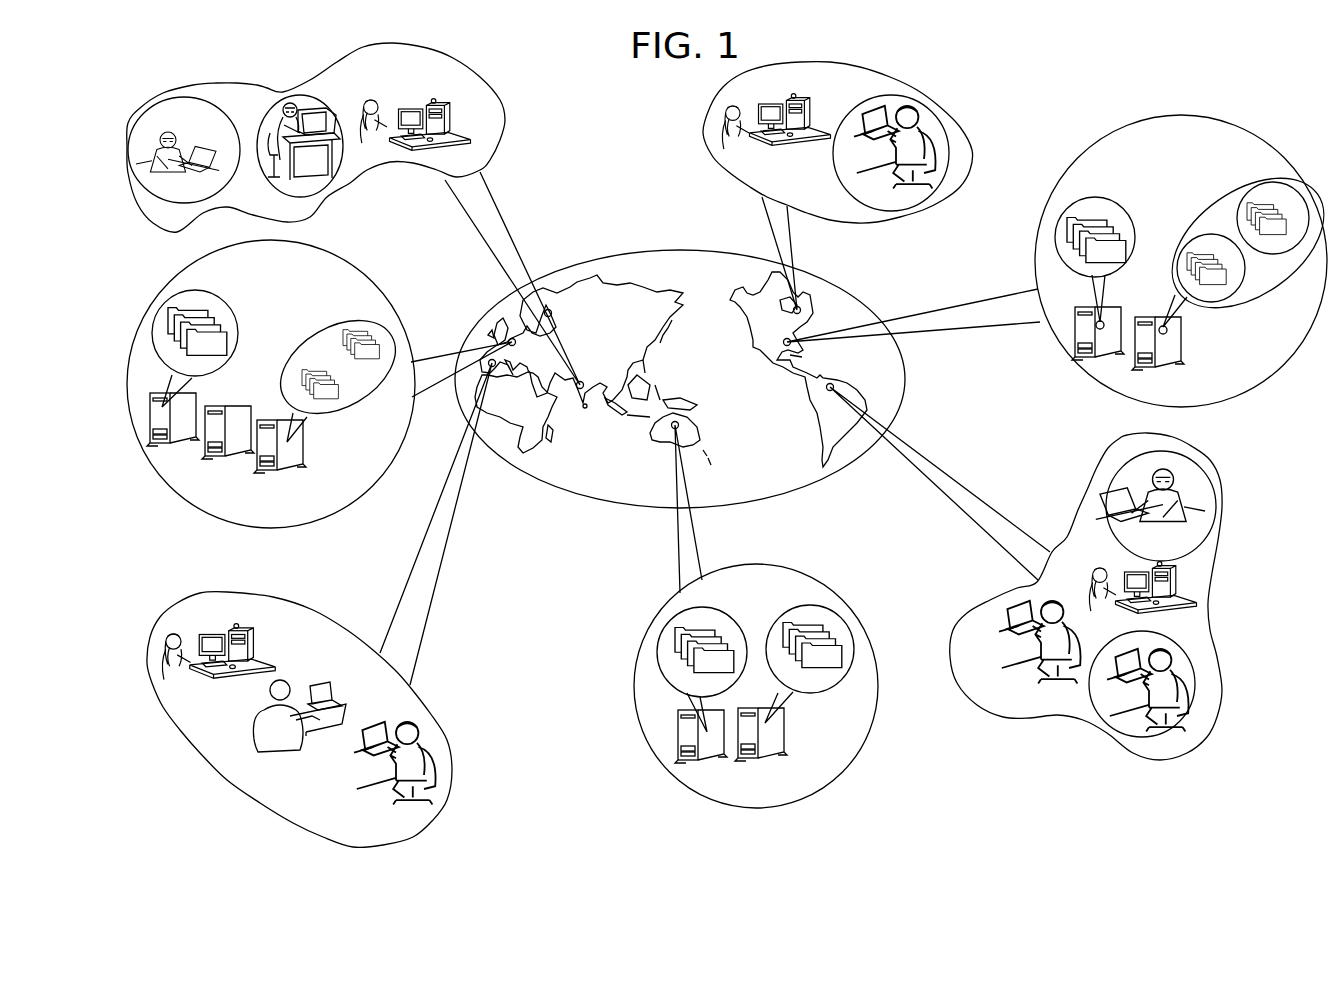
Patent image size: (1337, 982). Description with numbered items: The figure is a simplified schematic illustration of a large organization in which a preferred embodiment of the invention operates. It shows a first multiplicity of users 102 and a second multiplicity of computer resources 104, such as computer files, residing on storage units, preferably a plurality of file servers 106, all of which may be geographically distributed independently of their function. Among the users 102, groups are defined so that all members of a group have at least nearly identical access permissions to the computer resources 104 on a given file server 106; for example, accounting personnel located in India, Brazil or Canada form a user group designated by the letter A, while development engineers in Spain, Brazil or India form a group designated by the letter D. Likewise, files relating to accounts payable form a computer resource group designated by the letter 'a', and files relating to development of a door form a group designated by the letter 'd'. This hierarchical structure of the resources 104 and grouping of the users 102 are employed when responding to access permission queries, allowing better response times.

The first multiplicity of users 102 is at (257, 80).
The second multiplicity of computer resources 104 is at (317, 337).
The file servers 106 is at (178, 430).